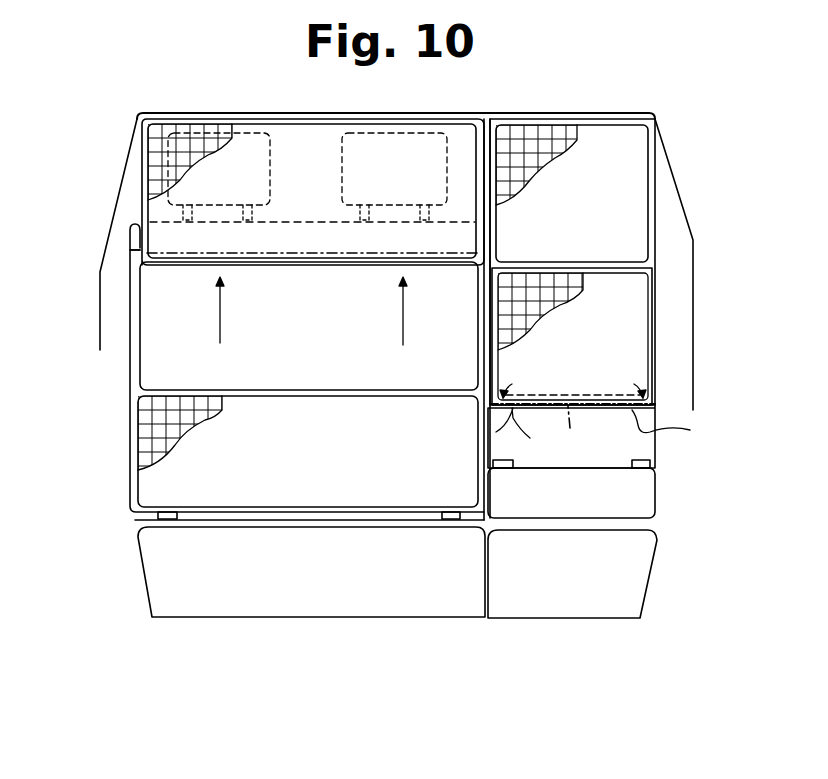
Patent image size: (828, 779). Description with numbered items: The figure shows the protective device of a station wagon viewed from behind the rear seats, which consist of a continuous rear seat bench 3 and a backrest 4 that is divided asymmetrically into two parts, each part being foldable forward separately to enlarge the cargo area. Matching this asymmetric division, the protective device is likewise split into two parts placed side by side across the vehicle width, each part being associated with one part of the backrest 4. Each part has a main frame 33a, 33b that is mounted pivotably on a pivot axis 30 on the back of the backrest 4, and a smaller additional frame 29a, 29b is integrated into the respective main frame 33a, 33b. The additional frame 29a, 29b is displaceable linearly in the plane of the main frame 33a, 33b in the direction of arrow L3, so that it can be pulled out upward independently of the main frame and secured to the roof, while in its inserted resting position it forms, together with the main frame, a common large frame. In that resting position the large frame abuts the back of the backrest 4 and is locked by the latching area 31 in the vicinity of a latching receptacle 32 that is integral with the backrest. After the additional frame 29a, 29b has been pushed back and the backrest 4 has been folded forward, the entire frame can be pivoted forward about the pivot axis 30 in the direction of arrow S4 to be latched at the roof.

The rear seat bench 3 is at (326, 600).
The backrest 4 is at (660, 448).
The pivot axis 30 is at (130, 255).
The latching area 31 is at (503, 110).
The latching receptacle 32 is at (637, 469).
The additional frame 29a is at (328, 206).
The additional frame 29b is at (605, 354).
The main frame 33a is at (305, 476).
The main frame 33b is at (605, 227).
The arrow of linear displacement L3 is at (222, 322).
The arrow of pivoting direction S4 is at (609, 436).